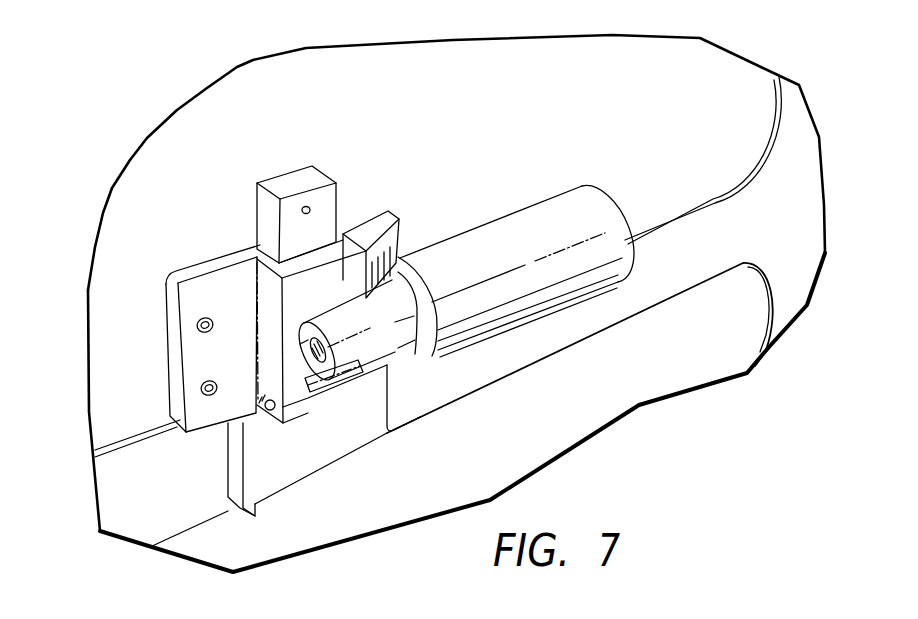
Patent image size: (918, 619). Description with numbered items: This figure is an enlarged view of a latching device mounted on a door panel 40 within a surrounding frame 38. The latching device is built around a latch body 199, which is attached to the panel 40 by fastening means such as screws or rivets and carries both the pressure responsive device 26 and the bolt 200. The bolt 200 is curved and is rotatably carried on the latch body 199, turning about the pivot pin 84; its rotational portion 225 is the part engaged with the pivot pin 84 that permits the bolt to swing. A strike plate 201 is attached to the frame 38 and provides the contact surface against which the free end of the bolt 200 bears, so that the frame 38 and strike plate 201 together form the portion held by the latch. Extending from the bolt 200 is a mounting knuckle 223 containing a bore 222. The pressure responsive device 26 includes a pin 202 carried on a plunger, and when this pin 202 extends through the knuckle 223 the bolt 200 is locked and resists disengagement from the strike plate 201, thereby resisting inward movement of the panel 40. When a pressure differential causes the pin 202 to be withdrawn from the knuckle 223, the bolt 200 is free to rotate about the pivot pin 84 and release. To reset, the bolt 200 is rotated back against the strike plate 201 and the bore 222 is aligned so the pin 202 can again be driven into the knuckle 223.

The panel 40 is at (120, 230).
The frame 38 is at (137, 523).
The latch body 199 is at (163, 369).
The bolt 200 is at (328, 418).
The strike plate 201 is at (263, 480).
The pin 202 is at (310, 344).
The bore 222 is at (304, 346).
The mounting knuckle 223 is at (344, 320).
The rotational portion 225 is at (342, 390).
The pivot pin 84 is at (267, 403).
The pressure responsive device 26 is at (587, 287).